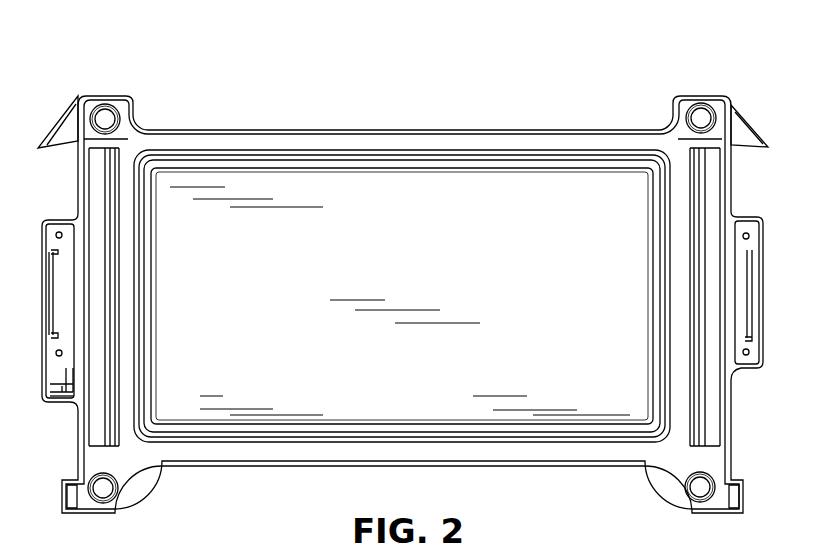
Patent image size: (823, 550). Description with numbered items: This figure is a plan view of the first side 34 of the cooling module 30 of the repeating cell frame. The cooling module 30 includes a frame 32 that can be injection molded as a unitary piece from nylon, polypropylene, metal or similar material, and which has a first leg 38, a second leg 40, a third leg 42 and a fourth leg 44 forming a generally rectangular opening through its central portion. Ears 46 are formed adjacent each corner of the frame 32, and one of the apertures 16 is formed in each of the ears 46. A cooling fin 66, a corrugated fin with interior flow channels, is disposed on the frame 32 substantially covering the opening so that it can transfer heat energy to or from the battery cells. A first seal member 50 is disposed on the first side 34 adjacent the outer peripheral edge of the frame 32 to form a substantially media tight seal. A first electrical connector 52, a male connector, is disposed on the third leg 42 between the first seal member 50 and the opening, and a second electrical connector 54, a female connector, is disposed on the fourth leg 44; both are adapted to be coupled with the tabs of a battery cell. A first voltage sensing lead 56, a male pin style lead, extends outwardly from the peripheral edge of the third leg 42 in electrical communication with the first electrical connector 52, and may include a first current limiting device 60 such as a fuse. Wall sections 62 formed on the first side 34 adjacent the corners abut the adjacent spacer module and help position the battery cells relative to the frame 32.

The cooling module 30 is at (709, 63).
The frame 32 is at (745, 170).
The first side 34 is at (712, 453).
The first leg 38 is at (400, 130).
The second leg 40 is at (500, 466).
The third leg 42 is at (76, 200).
The fourth leg 44 is at (733, 392).
The ears 46 is at (76, 97).
The apertures 16 is at (108, 114).
The first seal member 50 is at (152, 468).
The first electrical connector 52 is at (57, 300).
The second electrical connector 54 is at (742, 296).
The first voltage sensing lead 56 is at (62, 388).
The first current limiting device 60 is at (60, 373).
The wall sections 62 is at (77, 172).
The cooling fin 66 is at (237, 190).